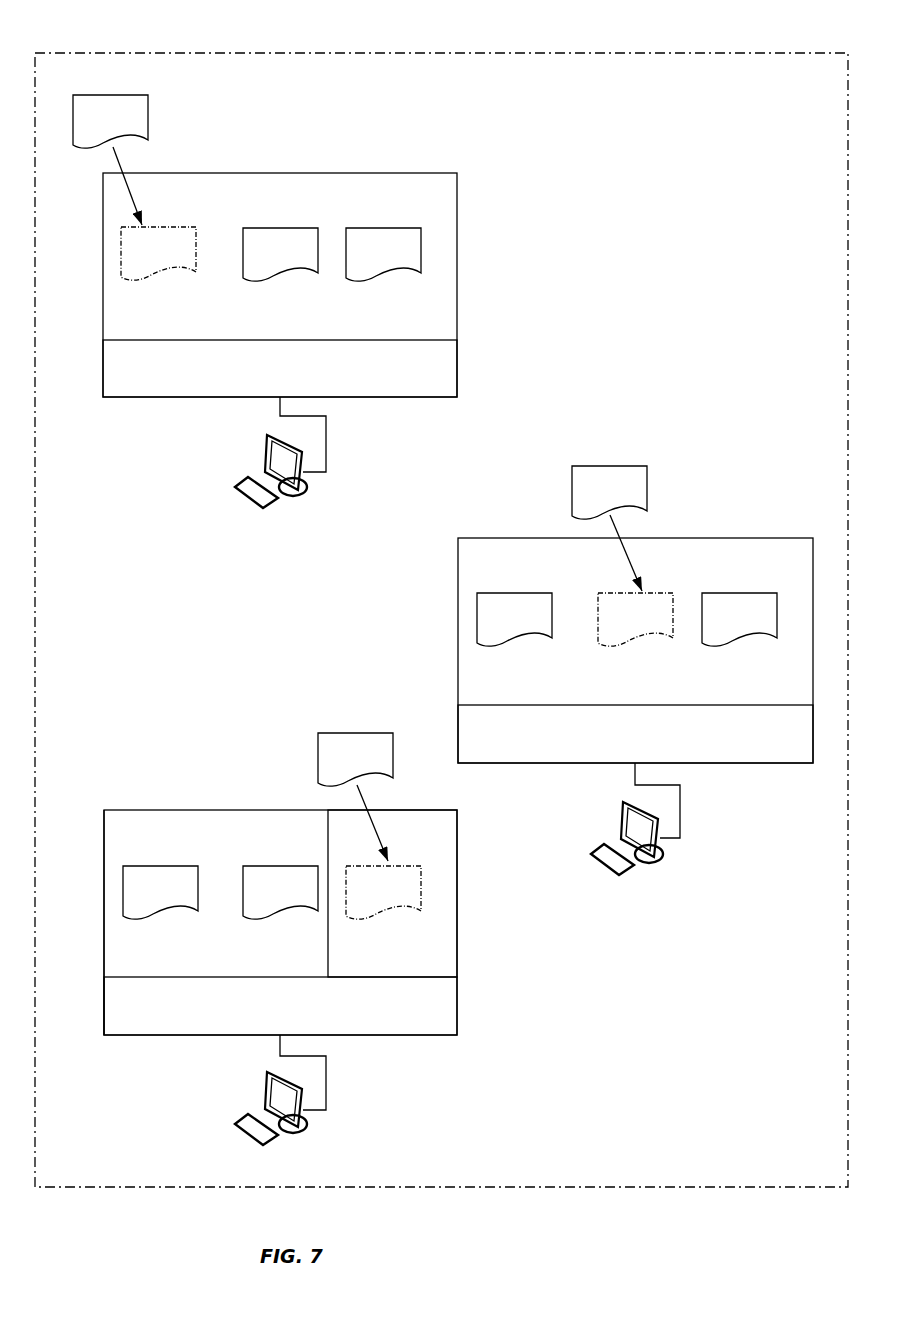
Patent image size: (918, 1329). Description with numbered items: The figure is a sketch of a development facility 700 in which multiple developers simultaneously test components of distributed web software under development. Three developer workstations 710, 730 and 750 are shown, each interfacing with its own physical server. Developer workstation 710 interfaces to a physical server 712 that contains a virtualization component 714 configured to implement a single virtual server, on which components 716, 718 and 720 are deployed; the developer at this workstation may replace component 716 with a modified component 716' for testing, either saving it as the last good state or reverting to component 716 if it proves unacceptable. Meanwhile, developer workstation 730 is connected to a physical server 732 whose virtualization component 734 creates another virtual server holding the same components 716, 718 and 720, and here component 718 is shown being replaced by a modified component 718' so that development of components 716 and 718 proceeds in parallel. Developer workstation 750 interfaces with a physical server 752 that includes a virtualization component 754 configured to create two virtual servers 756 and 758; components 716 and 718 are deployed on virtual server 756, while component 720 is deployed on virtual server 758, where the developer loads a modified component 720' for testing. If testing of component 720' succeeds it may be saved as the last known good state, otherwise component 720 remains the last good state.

The development facility 700 is at (473, 53).
The developer workstation 710 is at (305, 497).
The physical server 712 is at (459, 290).
The virtualization component 714 is at (459, 375).
The component 716 is at (336, 559).
The modified component 716' is at (150, 160).
The component 718 is at (468, 556).
The modified component 718' is at (609, 502).
The component 720 is at (561, 555).
The modified component 720' is at (355, 777).
The developer workstation 730 is at (658, 867).
The physical server 732 is at (752, 538).
The virtualization component 734 is at (787, 747).
The developer workstation 750 is at (310, 1130).
The physical server 752 is at (143, 807).
The virtualization component 754 is at (440, 1017).
The virtual server 756 is at (105, 1005).
The virtual server 758 is at (460, 959).